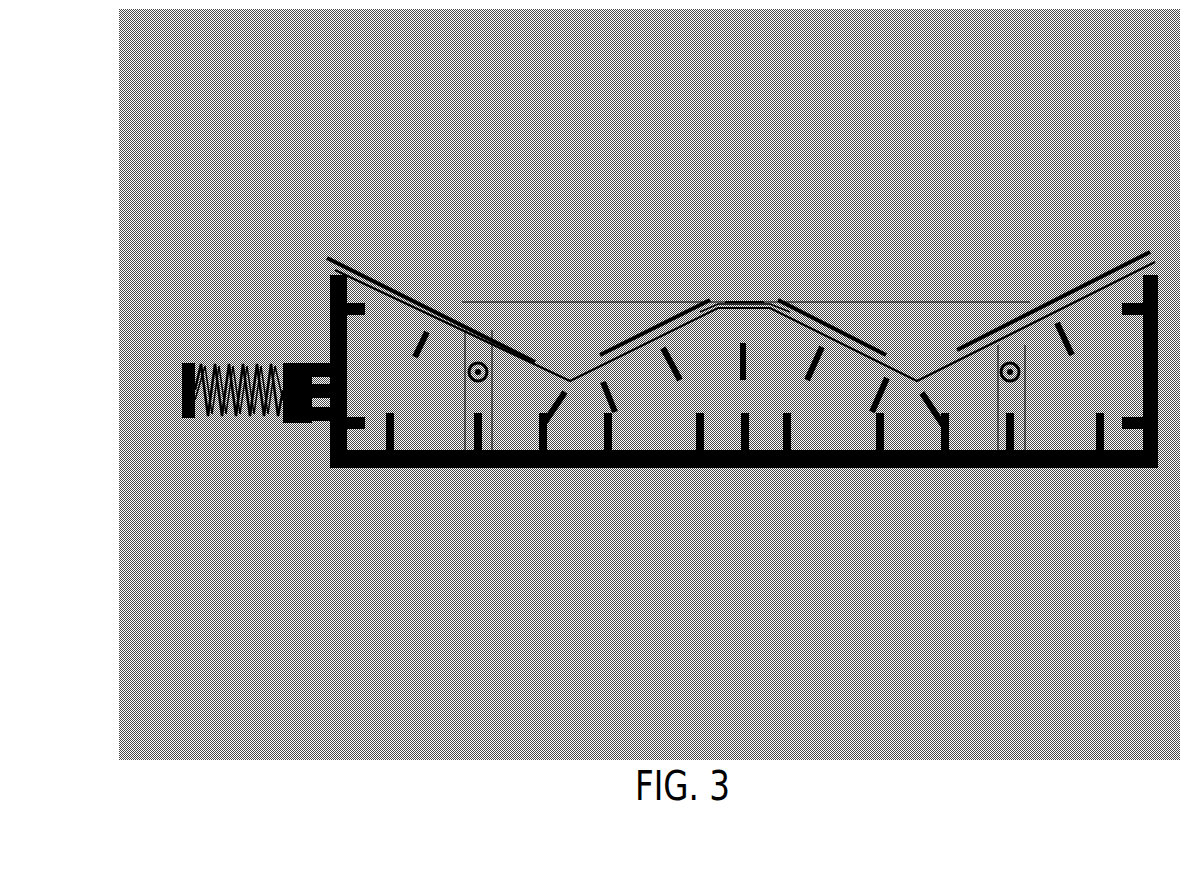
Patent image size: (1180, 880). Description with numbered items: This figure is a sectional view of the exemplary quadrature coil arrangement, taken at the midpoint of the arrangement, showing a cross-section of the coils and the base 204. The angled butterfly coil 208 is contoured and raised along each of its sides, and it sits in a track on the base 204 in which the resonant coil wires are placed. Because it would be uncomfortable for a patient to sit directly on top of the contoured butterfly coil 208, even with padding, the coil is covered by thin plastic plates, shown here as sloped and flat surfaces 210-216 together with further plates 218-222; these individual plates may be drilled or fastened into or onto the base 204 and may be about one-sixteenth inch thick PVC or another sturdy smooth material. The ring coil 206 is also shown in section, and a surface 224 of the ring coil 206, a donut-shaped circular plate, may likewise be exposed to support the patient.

The base 204 is at (1060, 470).
The ring coil 206 is at (732, 297).
The angled butterfly coil 208 is at (490, 472).
The surfaces 210-216 is at (632, 338).
The plates 218-222 is at (910, 387).
The surface of the ring coil 224 is at (890, 292).